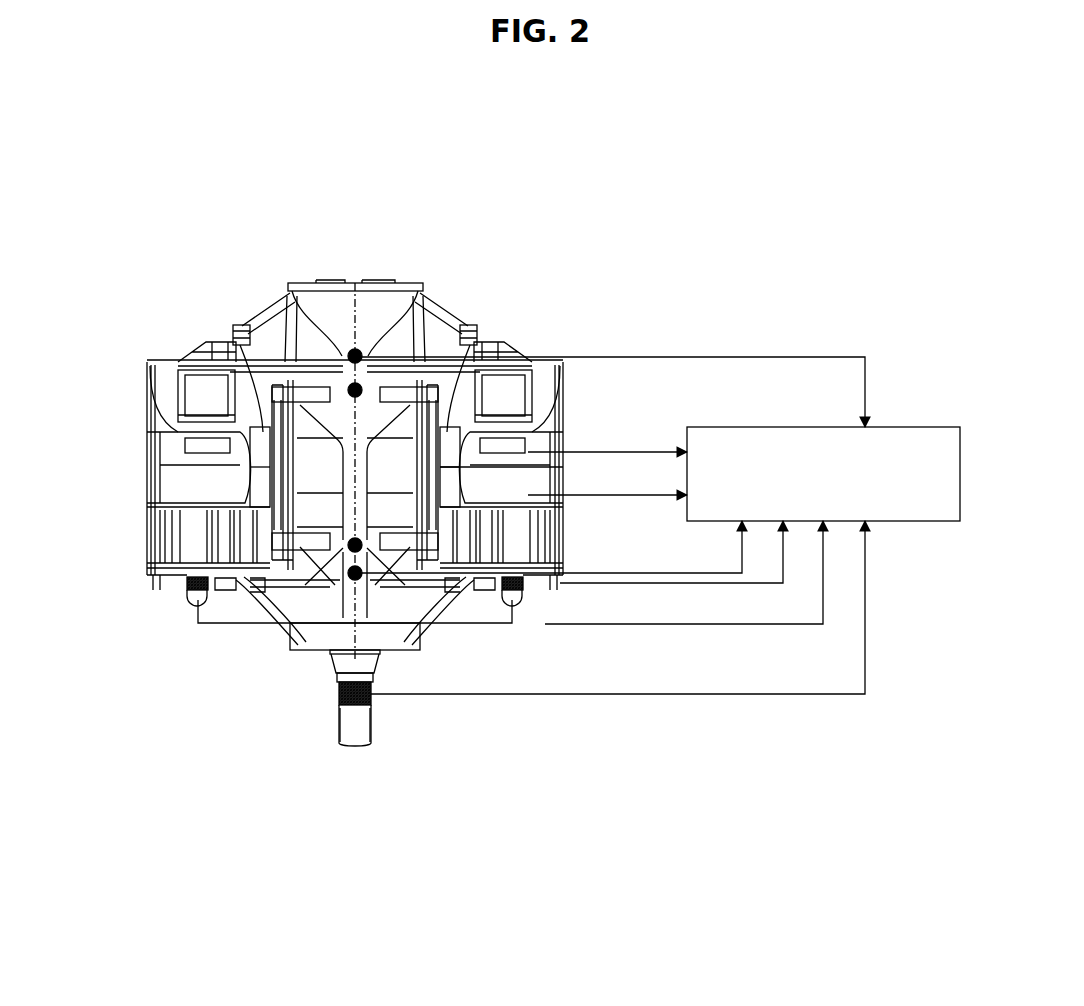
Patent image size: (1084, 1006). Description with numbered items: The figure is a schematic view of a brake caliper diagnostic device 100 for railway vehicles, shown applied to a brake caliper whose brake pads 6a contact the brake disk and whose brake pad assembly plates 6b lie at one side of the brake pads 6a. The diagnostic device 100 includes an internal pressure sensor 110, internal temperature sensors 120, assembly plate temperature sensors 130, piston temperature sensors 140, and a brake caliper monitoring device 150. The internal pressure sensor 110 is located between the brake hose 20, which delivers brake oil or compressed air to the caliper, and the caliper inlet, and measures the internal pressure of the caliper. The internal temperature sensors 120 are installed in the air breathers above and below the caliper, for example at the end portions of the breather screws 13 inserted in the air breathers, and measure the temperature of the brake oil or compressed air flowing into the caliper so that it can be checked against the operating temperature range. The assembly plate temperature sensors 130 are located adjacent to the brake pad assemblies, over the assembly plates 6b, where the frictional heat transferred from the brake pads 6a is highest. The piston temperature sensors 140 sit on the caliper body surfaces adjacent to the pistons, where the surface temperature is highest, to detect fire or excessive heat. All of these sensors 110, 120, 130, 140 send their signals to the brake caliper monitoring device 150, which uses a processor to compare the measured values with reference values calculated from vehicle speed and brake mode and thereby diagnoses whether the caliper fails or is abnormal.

The brake caliper diagnostic device 100 is at (340, 116).
The brake pad 6a is at (308, 412).
The brake pad assembly plate 6b is at (440, 360).
The breather screw 13 is at (197, 602).
The brake hose 20 is at (345, 728).
The internal pressure sensor 110 is at (372, 700).
The internal temperature sensor 120 is at (187, 586).
The assembly plate temperature sensor 130 is at (360, 286).
The piston temperature sensor 140 is at (300, 287).
The brake caliper monitoring device 150 is at (790, 426).